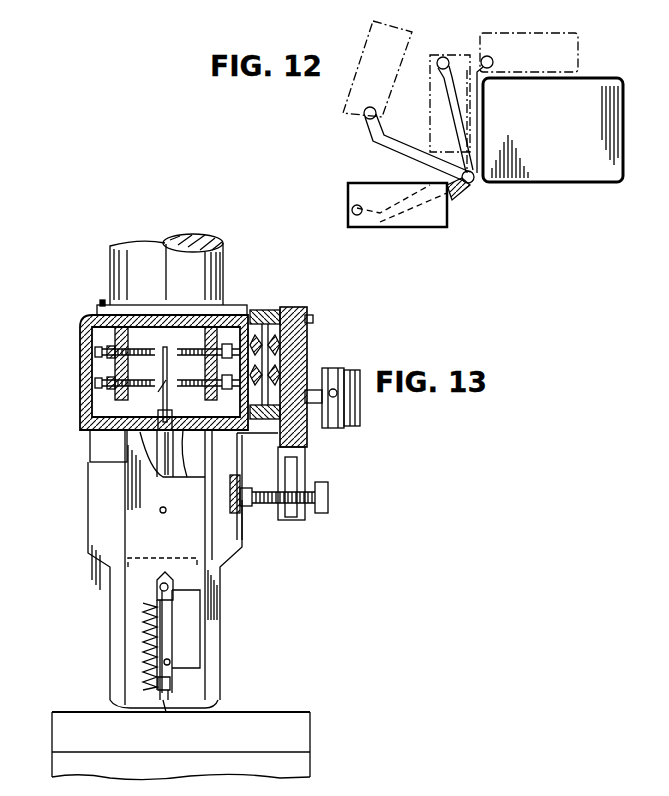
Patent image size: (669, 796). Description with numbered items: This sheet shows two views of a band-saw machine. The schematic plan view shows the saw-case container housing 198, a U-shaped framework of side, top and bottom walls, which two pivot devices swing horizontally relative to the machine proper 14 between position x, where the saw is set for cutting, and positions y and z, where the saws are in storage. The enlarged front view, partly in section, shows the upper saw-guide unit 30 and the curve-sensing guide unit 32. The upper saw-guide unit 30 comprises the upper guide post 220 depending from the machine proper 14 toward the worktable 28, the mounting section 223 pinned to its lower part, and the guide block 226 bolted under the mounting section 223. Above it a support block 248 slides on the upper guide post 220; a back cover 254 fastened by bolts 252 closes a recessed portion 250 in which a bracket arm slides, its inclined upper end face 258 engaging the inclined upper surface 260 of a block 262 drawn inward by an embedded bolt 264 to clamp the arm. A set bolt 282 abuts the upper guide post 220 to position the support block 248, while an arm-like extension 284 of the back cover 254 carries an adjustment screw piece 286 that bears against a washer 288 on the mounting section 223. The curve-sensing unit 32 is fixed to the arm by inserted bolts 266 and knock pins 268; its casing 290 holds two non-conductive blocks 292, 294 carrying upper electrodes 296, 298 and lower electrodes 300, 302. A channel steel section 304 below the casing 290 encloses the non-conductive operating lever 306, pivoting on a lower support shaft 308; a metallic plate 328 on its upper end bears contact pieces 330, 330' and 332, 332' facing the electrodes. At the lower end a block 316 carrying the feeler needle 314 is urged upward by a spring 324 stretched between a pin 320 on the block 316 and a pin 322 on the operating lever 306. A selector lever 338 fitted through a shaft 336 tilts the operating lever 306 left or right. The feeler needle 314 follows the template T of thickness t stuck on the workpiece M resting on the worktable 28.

In FIG. 12, the machine proper 14 is at (585, 104).
In FIG. 12, the container housing 198 is at (460, 128).
In FIG. 12, the position x is at (374, 196).
In FIG. 12, the position y is at (456, 73).
In FIG. 12, the position z is at (512, 56).
In FIG. 13, the upper guide post 220 is at (132, 250).
In FIG. 13, the support block 248 is at (102, 300).
In FIG. 13, the enclosed block 294 is at (85, 328).
In FIG. 13, the upper electrode 298 is at (110, 333).
In FIG. 13, the lower electrode 302 is at (110, 353).
In FIG. 13, the casing 290 is at (110, 377).
In FIG. 13, the upper electrode 296 is at (193, 350).
In FIG. 13, the contact piece 330 is at (167, 338).
In FIG. 13, the contact piece 330' is at (145, 354).
In FIG. 13, the contact piece 332' is at (98, 398).
In FIG. 13, the metallic plate 328 is at (97, 427).
In FIG. 13, the contact piece 332 is at (95, 428).
In FIG. 13, the inclined upper surface 260 is at (295, 307).
In FIG. 13, the bolt 252 is at (312, 315).
In FIG. 13, the embedded bolt 264 is at (308, 320).
In FIG. 13, the block 262 is at (310, 330).
In FIG. 13, the back cover 254 is at (313, 350).
In FIG. 13, the recessed portion 250 is at (307, 362).
In FIG. 13, the enclosed block 292 is at (230, 340).
In FIG. 13, the inclined upper end face 258 is at (227, 363).
In FIG. 13, the inserted bolt 266 is at (362, 383).
In FIG. 13, the set bolt 282 is at (305, 405).
In FIG. 13, the knock pin 268 is at (300, 408).
In FIG. 13, the arm-like extension 284 is at (327, 500).
In FIG. 13, the adjustment screw piece 286 is at (273, 507).
In FIG. 13, the washer 288 is at (250, 517).
In FIG. 13, the mounting section 223 is at (110, 498).
In FIG. 13, the lower electrode 300 is at (172, 471).
In FIG. 13, the channel steel section 304 is at (218, 578).
In FIG. 13, the selector lever 338 is at (217, 603).
In FIG. 13, the shaft 336 is at (170, 577).
In FIG. 13, the upper saw-guide unit 30 is at (263, 648).
In FIG. 13, the guide block 226 is at (120, 642).
In FIG. 13, the operating lever 306 is at (167, 648).
In FIG. 13, the lower support shaft 308 is at (173, 670).
In FIG. 13, the pin 322 is at (147, 607).
In FIG. 13, the spring 324 is at (147, 670).
In FIG. 13, the curve-sensing guide unit 32 is at (192, 692).
In FIG. 13, the block 316 is at (160, 700).
In FIG. 13, the feeler needle 314 is at (165, 707).
In FIG. 13, the thickness t is at (176, 734).
In FIG. 13, the template T is at (62, 710).
In FIG. 13, the pin 320 is at (110, 697).
In FIG. 13, the workpiece M is at (303, 733).
In FIG. 13, the worktable 28 is at (295, 768).